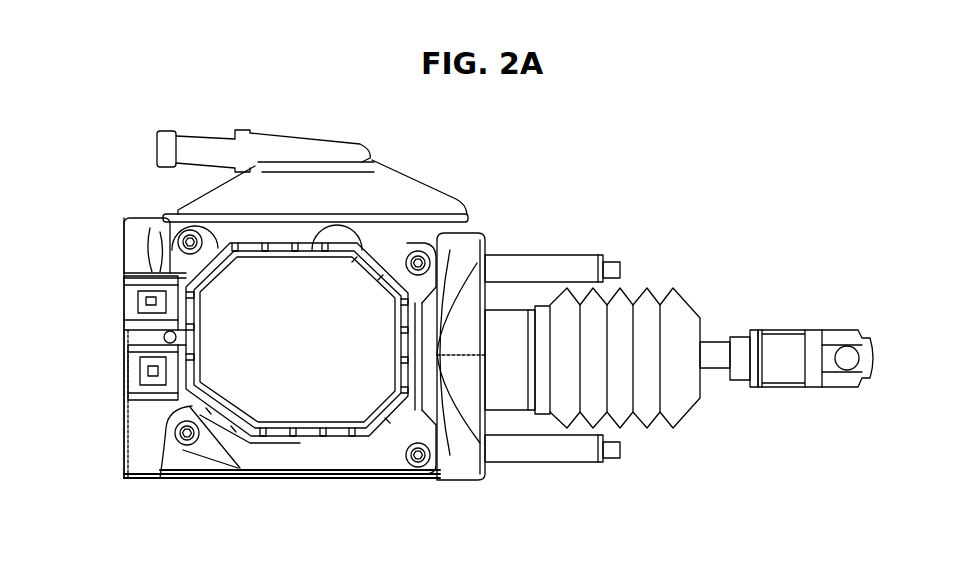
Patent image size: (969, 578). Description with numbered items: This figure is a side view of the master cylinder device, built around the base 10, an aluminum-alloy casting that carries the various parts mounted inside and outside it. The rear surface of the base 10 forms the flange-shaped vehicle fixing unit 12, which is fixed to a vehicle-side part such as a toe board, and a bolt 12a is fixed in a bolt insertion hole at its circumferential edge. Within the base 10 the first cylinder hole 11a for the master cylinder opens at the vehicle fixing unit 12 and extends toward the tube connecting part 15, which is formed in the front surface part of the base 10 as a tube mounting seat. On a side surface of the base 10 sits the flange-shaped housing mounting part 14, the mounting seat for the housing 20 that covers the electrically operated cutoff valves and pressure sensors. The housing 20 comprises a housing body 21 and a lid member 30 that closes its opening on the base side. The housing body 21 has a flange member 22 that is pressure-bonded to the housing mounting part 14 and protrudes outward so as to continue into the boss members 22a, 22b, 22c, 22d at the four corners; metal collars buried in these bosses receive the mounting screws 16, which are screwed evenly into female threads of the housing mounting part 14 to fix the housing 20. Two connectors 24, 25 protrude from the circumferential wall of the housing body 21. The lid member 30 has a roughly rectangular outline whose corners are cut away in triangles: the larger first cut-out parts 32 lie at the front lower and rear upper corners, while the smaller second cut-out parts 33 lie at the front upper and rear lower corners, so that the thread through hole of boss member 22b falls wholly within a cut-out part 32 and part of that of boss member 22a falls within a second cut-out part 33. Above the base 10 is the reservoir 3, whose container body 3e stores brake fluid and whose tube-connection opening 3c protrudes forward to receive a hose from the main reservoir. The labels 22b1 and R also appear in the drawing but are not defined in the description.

The base 10 is at (118, 215).
The flange member 22 is at (328, 453).
The boss member 22a is at (165, 250).
The boss member 22b is at (163, 450).
The housing rib portion 22b1 is at (215, 463).
The boss member 22c is at (437, 477).
The boss member 22d is at (445, 233).
The second cut-out parts 33 is at (165, 232).
The connector 24 is at (130, 303).
The connector 25 is at (133, 370).
The tube connecting part 15 is at (120, 446).
The mounting screws 16 is at (190, 230).
The lid member 30 is at (332, 292).
The housing body 21 is at (276, 452).
The first cut-out parts 32 is at (382, 240).
The housing 20 is at (275, 230).
The reservoir 3 is at (385, 158).
The container body 3e is at (392, 230).
The tube-connection opening 3c is at (262, 133).
The housing mounting part 14 is at (195, 462).
The vehicle fixing unit 12 is at (492, 240).
The bolt 12a is at (583, 258).
The first cylinder hole 11a is at (503, 390).
The rod end R is at (718, 347).